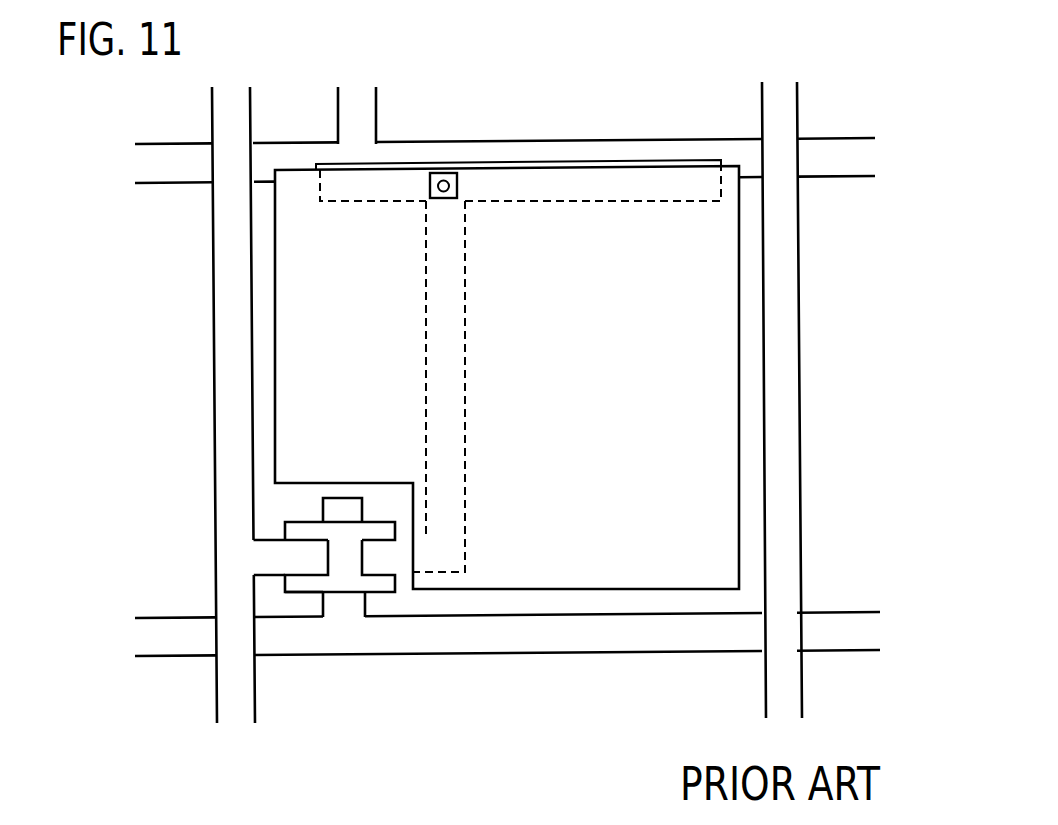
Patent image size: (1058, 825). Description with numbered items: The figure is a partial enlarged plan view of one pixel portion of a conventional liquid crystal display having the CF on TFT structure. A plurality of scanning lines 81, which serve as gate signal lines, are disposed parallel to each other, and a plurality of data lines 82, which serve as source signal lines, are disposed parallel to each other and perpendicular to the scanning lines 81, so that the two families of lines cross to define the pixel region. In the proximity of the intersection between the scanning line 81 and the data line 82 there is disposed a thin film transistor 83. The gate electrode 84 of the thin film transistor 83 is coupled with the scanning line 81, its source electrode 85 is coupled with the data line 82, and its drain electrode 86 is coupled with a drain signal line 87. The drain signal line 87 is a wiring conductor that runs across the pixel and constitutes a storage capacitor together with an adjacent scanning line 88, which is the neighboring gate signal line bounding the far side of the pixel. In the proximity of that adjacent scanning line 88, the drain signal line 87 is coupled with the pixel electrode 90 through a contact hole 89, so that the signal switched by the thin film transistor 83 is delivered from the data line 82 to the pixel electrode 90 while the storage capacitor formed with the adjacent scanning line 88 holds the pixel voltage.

The scanning line 81 is at (578, 637).
The data line 82 is at (232, 684).
The thin film transistor 83 is at (305, 605).
The gate electrode 84 is at (343, 607).
The source electrode 85 is at (313, 557).
The drain electrode 86 is at (377, 562).
The drain signal line 87 is at (452, 424).
The adjacent scanning line 88 is at (841, 165).
The contact hole 89 is at (446, 173).
The pixel electrode 90 is at (690, 373).